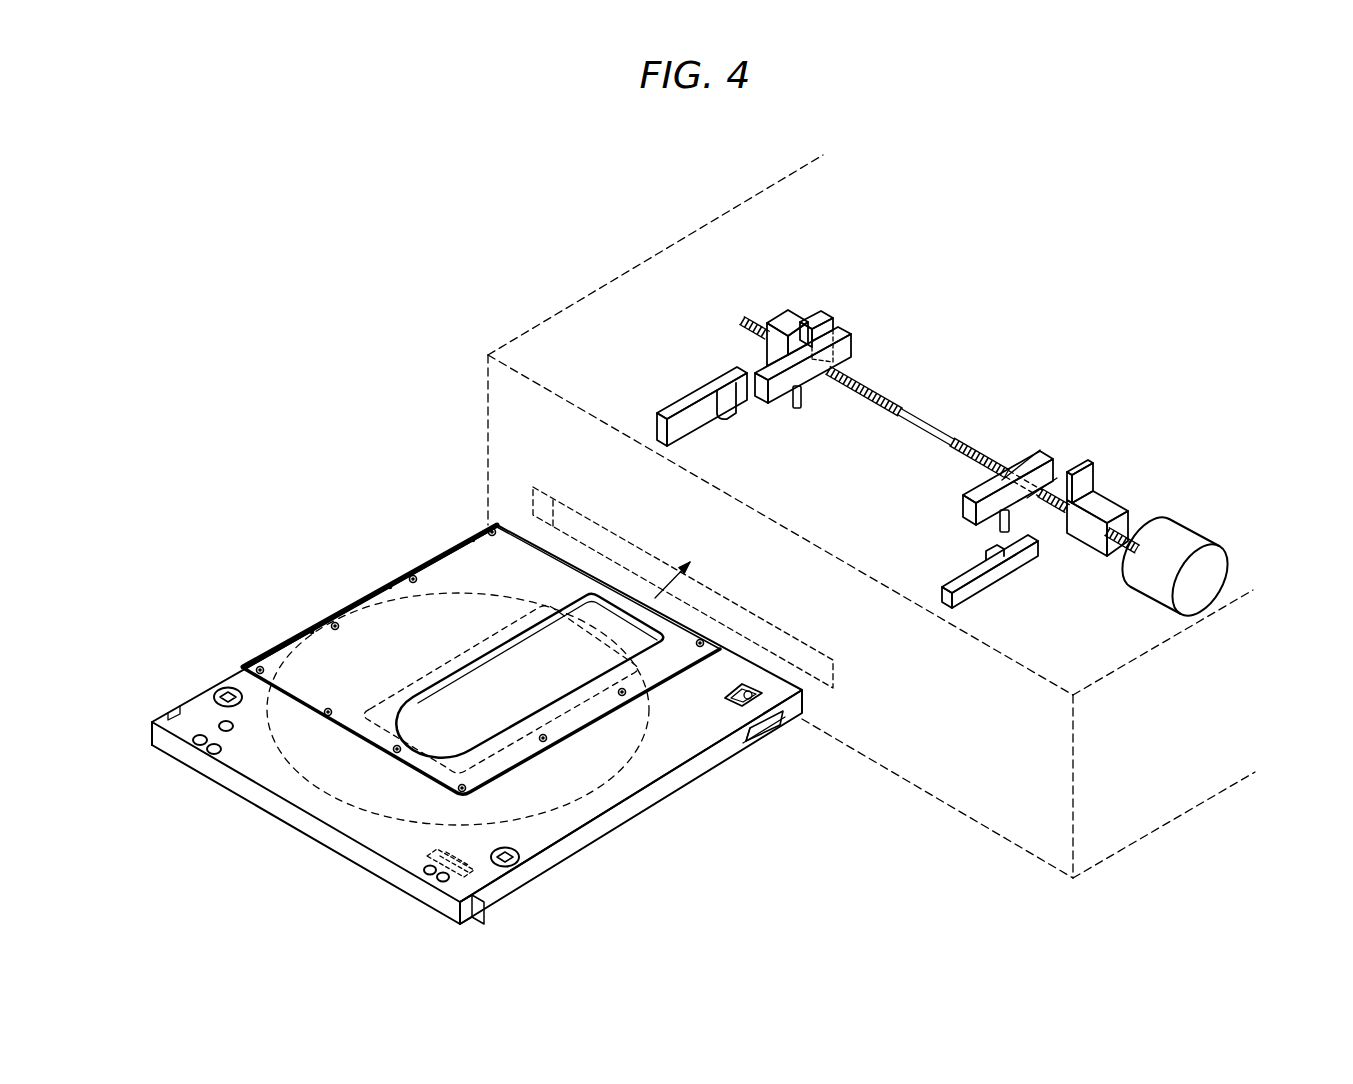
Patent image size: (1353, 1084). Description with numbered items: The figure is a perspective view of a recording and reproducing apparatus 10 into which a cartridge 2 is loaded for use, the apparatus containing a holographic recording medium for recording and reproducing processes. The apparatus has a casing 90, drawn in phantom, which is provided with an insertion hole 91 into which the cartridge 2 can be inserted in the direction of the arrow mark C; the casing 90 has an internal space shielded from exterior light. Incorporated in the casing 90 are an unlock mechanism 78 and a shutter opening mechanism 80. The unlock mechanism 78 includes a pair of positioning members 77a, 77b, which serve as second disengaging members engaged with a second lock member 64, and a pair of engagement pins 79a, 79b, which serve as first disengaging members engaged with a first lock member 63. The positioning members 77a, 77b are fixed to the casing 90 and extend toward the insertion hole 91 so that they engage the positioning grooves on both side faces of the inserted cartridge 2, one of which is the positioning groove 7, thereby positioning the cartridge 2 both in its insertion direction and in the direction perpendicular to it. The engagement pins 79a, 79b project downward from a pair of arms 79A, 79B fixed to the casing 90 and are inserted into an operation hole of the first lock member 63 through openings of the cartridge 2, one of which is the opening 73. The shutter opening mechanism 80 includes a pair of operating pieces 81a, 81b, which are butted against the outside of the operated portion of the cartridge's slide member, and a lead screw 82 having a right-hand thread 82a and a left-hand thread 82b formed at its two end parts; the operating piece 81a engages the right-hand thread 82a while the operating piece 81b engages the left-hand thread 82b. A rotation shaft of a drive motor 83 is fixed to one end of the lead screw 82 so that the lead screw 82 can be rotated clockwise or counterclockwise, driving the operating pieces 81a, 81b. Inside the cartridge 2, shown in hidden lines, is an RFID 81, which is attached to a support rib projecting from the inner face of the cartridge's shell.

The cartridge 2 is at (338, 597).
The positioning groove 7 is at (800, 713).
The recording and reproducing apparatus 10 is at (678, 230).
The first lock member 63 is at (744, 688).
The second lock member 64 is at (770, 742).
The opening 73 is at (740, 697).
The positioning member 77a is at (980, 583).
The positioning member 77b is at (688, 400).
The unlock mechanism 78 is at (725, 429).
The arm 79A is at (983, 491).
The arm 79B is at (758, 374).
The engagement pin 79a is at (997, 524).
The engagement pin 79b is at (797, 410).
The shutter opening mechanism 80 is at (989, 442).
The RFID 81 is at (472, 873).
The operating piece 81a is at (1083, 480).
The operating piece 81b is at (826, 320).
The lead screw 82 is at (923, 425).
The right-hand thread 82a is at (980, 447).
The left-hand thread 82b is at (878, 392).
The drive motor 83 is at (1177, 527).
The casing 90 is at (553, 315).
The insertion hole 91 is at (532, 494).